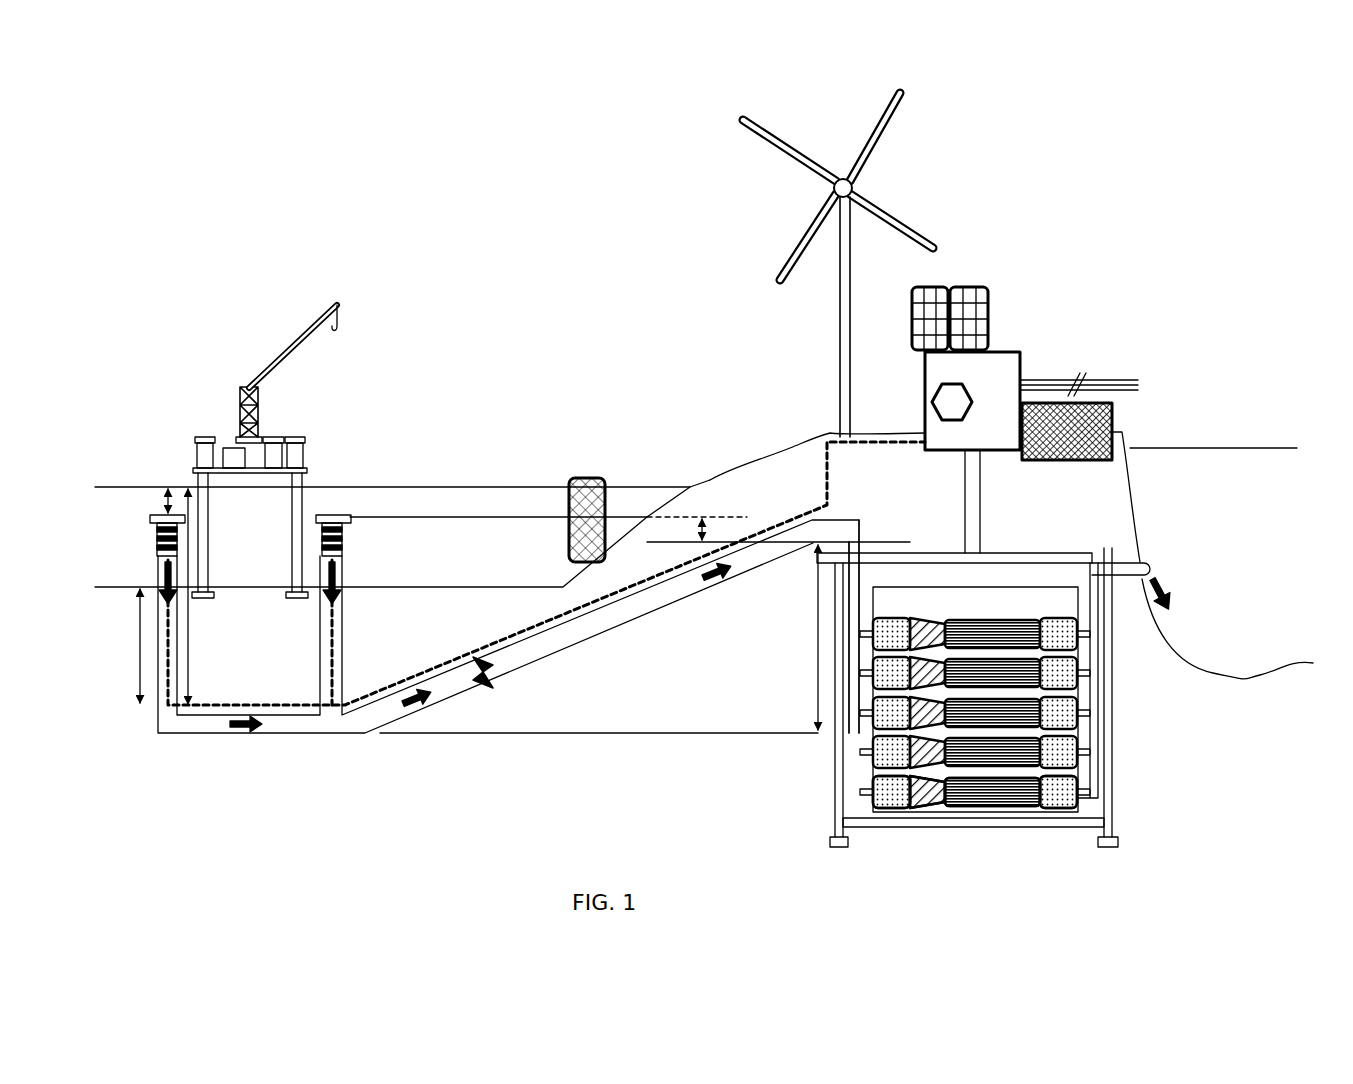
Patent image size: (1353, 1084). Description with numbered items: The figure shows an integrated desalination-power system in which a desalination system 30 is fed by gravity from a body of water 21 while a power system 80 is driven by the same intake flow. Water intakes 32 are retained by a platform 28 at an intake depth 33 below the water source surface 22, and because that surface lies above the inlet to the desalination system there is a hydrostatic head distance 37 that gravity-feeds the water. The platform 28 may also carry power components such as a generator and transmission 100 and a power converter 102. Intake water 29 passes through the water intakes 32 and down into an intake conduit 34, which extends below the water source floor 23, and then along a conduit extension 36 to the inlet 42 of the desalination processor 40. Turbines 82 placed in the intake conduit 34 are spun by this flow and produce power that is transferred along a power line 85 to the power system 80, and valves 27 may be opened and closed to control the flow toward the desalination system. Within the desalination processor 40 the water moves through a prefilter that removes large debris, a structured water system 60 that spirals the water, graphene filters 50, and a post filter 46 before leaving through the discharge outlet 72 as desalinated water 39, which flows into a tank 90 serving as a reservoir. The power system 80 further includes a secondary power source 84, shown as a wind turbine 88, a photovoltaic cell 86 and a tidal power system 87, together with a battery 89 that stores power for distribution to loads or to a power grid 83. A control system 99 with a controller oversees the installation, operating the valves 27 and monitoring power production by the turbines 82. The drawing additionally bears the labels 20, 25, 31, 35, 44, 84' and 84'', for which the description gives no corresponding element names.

The body of water 20 is at (477, 555).
The body of water 21 is at (428, 498).
The water source surface 22 is at (509, 482).
The water source floor 23 is at (516, 581).
The support post 25 is at (878, 437).
The valves 27 is at (490, 680).
The platform 28 is at (197, 437).
The intake water 29 is at (583, 627).
The desalination system 30 is at (1124, 683).
The pipe loop 31 is at (330, 735).
The water intakes 32 is at (327, 512).
The intake depth 33 is at (168, 487).
The intake conduit 34 is at (342, 632).
The depth 35 is at (137, 640).
The conduit extension 36 is at (637, 603).
The hydrostatic head distance 37 is at (712, 527).
The desalinated water 39 is at (1135, 565).
The desalination processor 40 is at (1078, 760).
The inlet 42 is at (855, 542).
The end cap 44 is at (887, 808).
The post filter 46 is at (1055, 810).
The graphene filters 50 is at (995, 810).
The structured water system 60 is at (928, 808).
The discharge outlet 72 is at (1153, 572).
The power system 80 is at (1110, 264).
The turbines 82 is at (343, 546).
The power grid 83 is at (1112, 380).
The secondary power source 84 is at (860, 265).
The solar panel 84' is at (993, 318).
The wave energy buoy 84'' is at (613, 489).
The power line 85 is at (826, 489).
The photovoltaic cell 86 is at (975, 287).
The tidal power system 87 is at (588, 477).
The wind turbine 88 is at (852, 190).
The battery 89 is at (1075, 465).
The tank 90 is at (1203, 475).
The control system 99 is at (940, 390).
The generator and transmission 100 is at (278, 440).
The power converter 102 is at (228, 448).